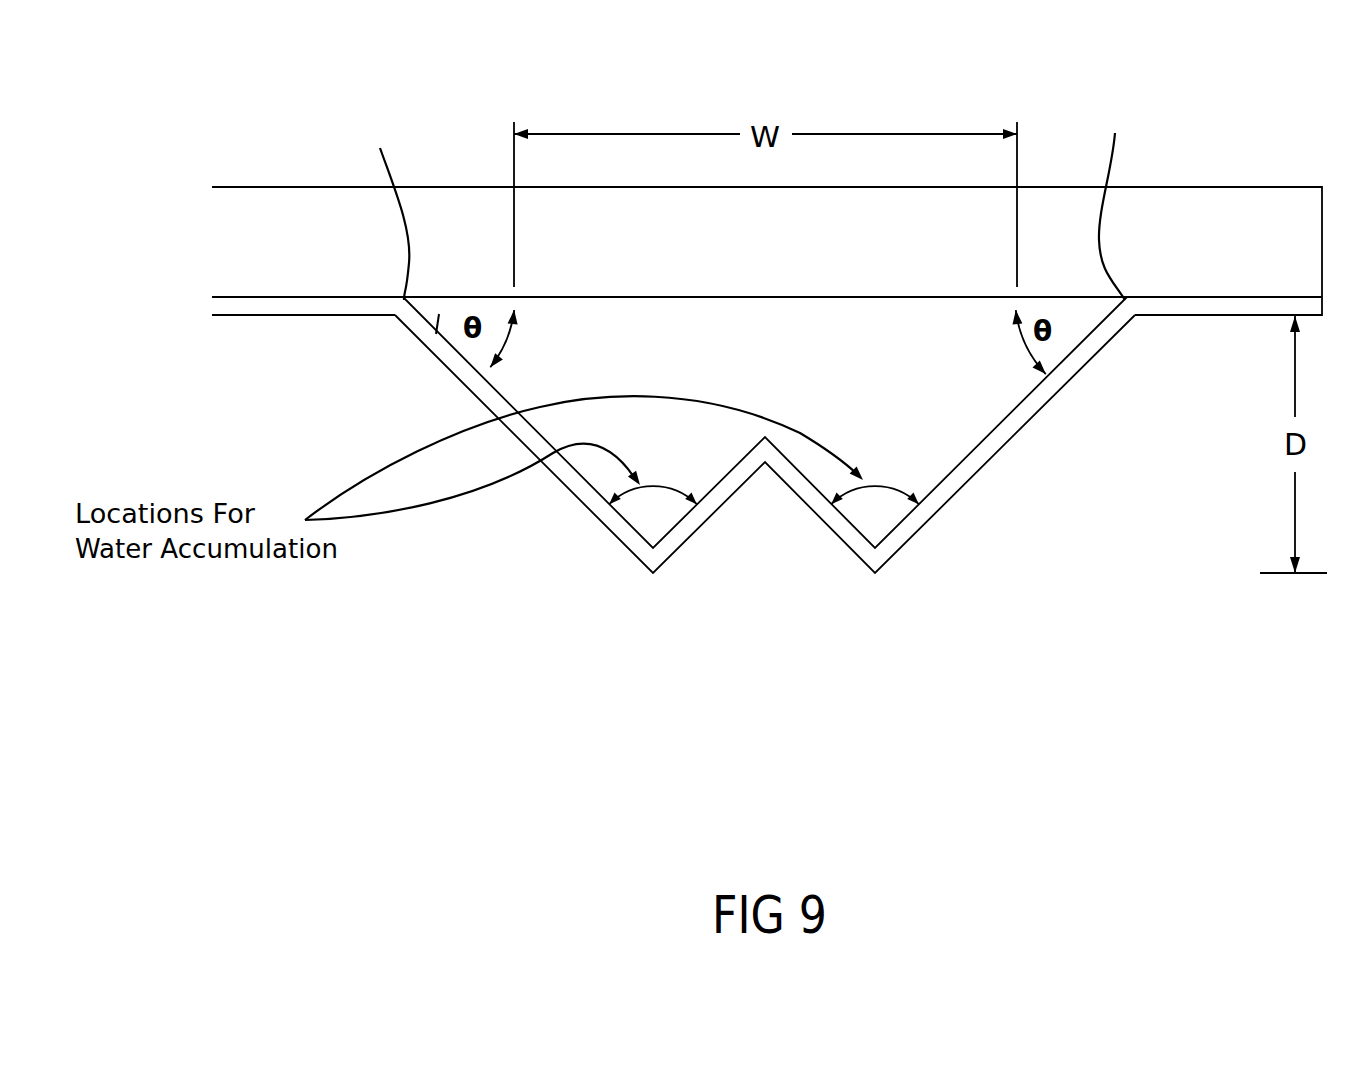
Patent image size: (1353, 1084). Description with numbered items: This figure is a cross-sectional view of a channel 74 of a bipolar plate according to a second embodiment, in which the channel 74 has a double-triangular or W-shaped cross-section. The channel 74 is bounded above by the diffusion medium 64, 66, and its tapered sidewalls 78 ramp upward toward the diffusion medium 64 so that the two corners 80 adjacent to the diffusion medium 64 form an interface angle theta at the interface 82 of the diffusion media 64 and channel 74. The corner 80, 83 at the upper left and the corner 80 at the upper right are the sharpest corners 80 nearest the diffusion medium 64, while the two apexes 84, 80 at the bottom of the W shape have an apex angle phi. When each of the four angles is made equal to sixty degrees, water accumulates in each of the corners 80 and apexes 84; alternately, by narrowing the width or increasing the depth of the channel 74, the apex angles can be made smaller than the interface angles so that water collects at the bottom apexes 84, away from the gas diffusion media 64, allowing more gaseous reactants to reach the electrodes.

The diffusion medium 64 is at (767, 202).
The panel 66 is at (1187, 197).
The interface 82 is at (739, 198).
The channel 74 is at (747, 489).
The sidewalls 78 is at (572, 490).
The corners 80 is at (747, 489).
The upper bend 83 is at (436, 334).
The apexes 84 is at (655, 523).